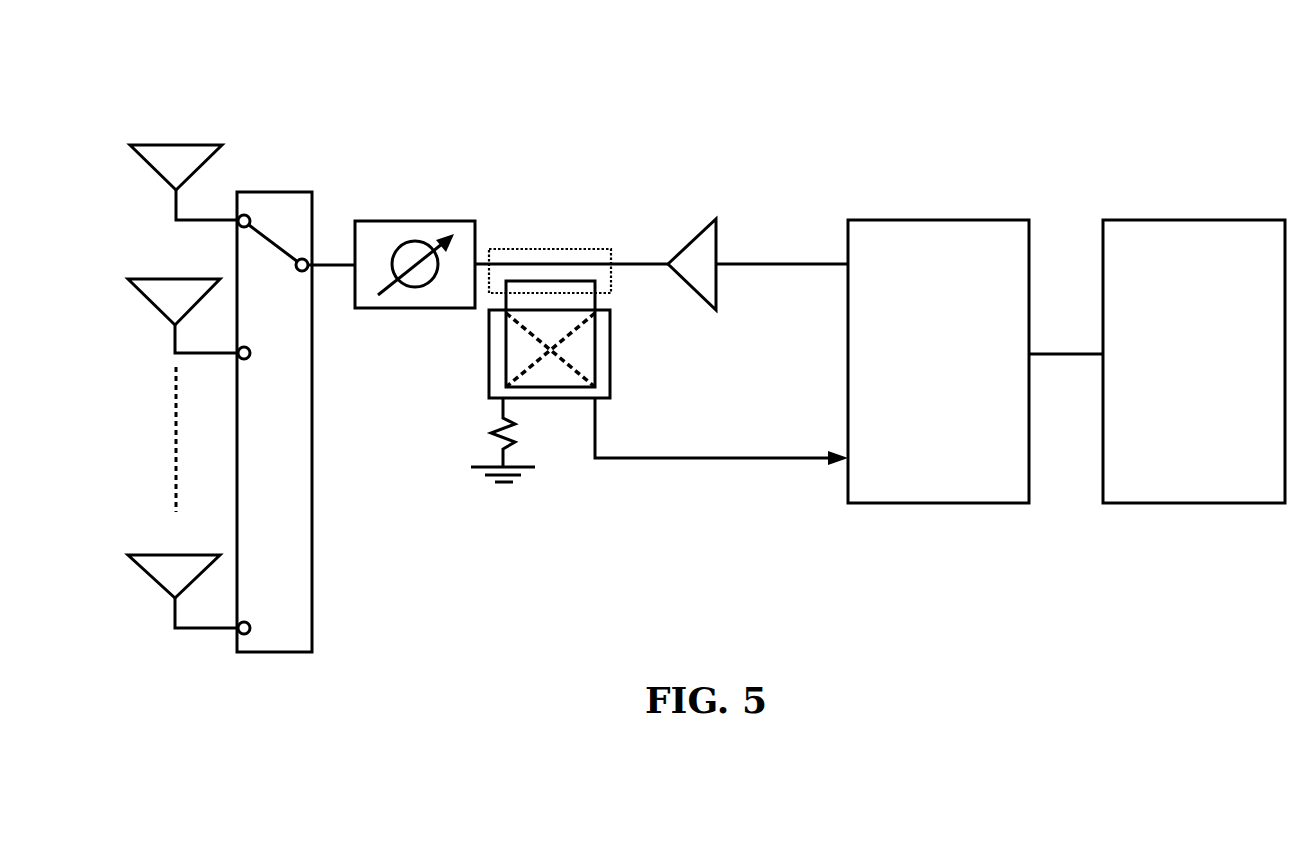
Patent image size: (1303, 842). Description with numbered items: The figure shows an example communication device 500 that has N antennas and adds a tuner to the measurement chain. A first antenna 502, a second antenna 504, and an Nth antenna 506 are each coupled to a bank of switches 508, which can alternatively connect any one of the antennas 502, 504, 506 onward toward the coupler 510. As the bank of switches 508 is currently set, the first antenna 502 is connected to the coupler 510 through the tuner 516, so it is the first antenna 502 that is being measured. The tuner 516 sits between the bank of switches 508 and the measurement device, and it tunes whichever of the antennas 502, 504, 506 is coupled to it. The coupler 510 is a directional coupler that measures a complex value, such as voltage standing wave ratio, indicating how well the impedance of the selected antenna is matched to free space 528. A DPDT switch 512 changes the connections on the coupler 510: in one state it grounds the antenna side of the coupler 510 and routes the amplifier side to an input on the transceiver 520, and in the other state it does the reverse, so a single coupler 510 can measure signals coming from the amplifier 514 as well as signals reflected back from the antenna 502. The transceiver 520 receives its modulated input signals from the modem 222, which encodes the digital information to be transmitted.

The communication device 500 is at (136, 84).
The first antenna 502 is at (156, 167).
The second antenna 504 is at (159, 312).
The Nth antenna 506 is at (159, 588).
The bank of switches 508 is at (300, 191).
The coupler 510 is at (597, 256).
The switch 512 is at (611, 330).
The amplifier 514 is at (716, 221).
The tuner 516 is at (453, 311).
The transceiver 520 is at (949, 505).
The free space 528 is at (298, 40).
The modem 222 is at (1247, 505).